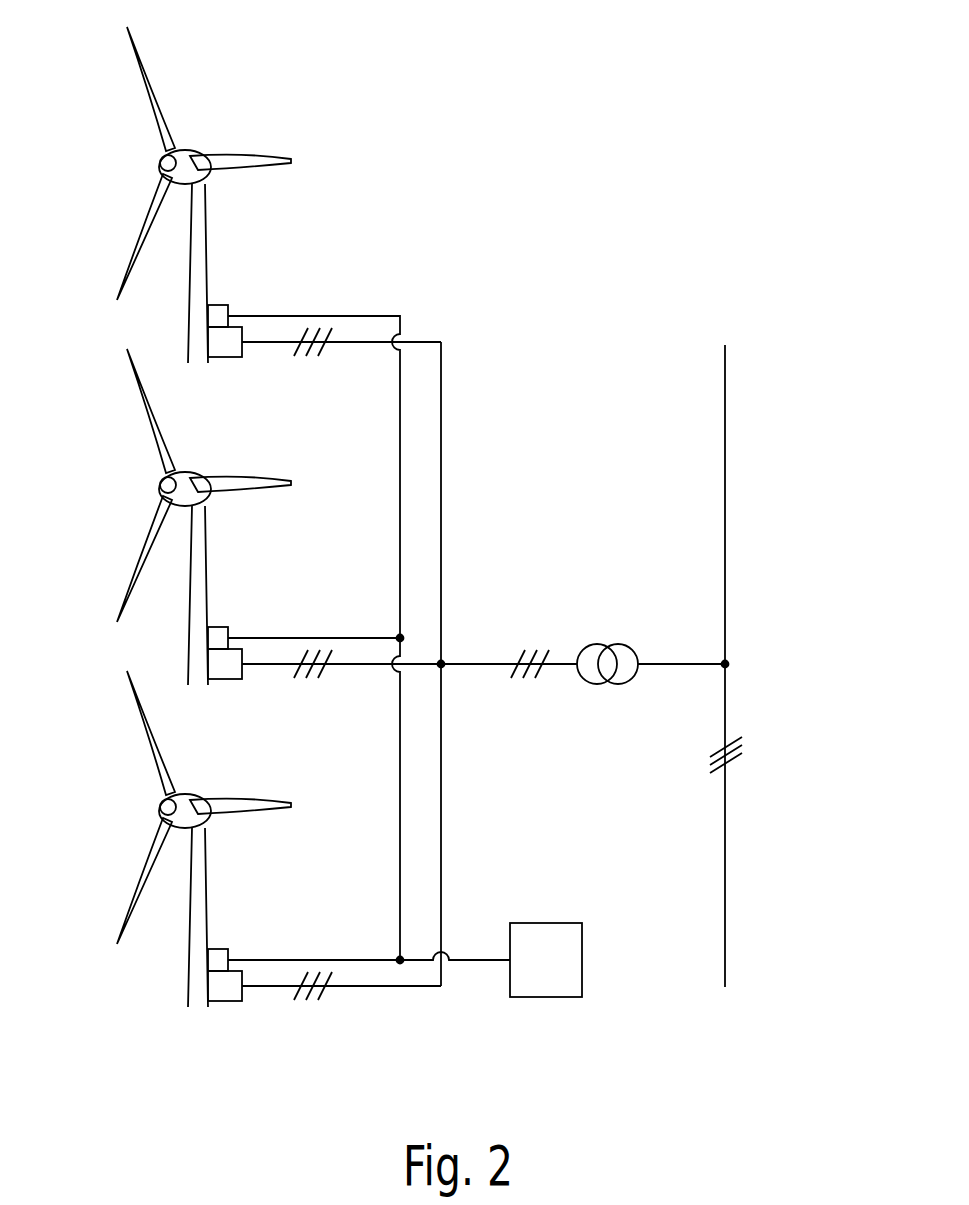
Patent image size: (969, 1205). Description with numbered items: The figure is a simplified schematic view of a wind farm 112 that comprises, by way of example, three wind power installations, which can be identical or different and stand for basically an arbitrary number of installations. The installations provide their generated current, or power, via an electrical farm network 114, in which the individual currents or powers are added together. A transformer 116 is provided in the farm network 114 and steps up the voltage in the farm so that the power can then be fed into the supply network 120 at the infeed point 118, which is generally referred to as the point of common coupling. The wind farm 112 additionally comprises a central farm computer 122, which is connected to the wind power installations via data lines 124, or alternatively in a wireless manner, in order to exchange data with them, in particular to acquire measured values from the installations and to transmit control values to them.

The wind farm 112 is at (584, 157).
The electrical farm network 114 is at (472, 662).
The transformer 116 is at (618, 614).
The infeed point 118 is at (741, 640).
The supply network 120 is at (725, 390).
The central farm computer 122 is at (548, 922).
The data lines 124 is at (400, 772).